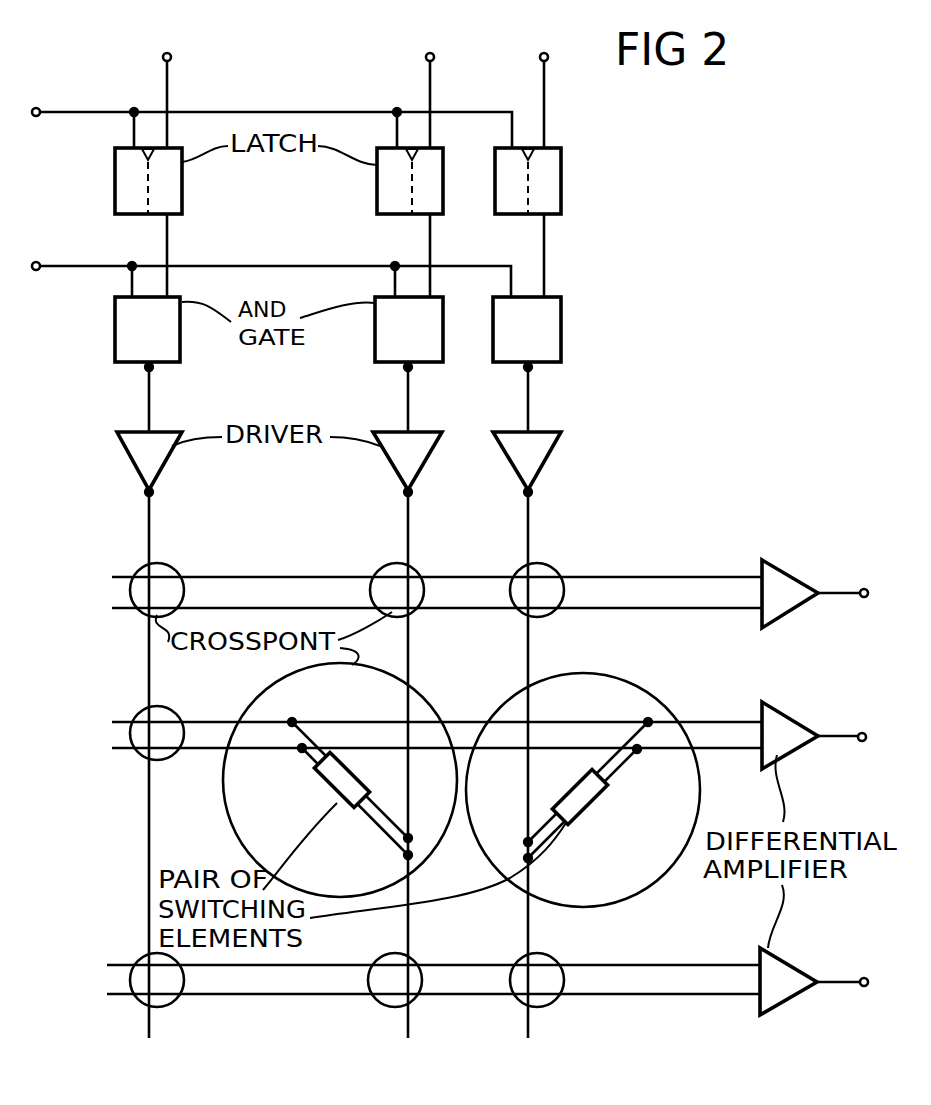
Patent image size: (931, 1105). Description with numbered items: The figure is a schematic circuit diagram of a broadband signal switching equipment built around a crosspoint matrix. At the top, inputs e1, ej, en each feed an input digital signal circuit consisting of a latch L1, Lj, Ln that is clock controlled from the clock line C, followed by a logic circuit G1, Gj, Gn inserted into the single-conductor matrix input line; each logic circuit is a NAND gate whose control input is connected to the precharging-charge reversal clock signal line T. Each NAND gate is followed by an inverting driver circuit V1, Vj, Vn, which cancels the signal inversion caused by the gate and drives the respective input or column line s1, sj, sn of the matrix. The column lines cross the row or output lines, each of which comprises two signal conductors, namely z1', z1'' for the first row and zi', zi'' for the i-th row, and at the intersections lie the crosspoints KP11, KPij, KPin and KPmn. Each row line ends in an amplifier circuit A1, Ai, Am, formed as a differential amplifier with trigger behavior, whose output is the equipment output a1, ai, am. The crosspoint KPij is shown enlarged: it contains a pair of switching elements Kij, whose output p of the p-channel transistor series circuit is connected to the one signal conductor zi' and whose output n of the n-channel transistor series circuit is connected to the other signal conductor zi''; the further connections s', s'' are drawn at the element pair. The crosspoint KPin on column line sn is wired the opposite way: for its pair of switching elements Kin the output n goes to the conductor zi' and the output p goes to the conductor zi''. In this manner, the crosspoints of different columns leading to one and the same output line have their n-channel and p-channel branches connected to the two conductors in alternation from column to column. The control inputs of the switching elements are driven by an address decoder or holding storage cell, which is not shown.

The clock line C is at (268, 115).
The precharging-charge reversal clock signal line T is at (268, 265).
The input e1 is at (167, 86).
The input ej is at (427, 86).
The input en is at (543, 86).
The latch L1 is at (168, 222).
The latch Lj is at (385, 222).
The latch Ln is at (549, 222).
The logic circuit G1 is at (173, 364).
The logic circuit Gj is at (386, 364).
The logic circuit Gn is at (551, 364).
The driver circuit V1 is at (164, 461).
The driver circuit Vj is at (396, 461).
The driver circuit Vn is at (541, 461).
The column line s1 is at (165, 761).
The column line sj is at (421, 761).
The column line sn is at (531, 761).
The signal conductor z1' is at (437, 557).
The signal conductor z1'' is at (437, 627).
The signal conductor zi' is at (437, 702).
The signal conductor zi'' is at (437, 765).
The crosspoint KP11 is at (184, 576).
The crosspoint KPij is at (350, 876).
The crosspoint KPin is at (628, 893).
The crosspoint KPmn is at (566, 999).
The pair of switching elements Kij is at (352, 774).
The pair of switching elements Kin is at (578, 815).
The output of the n-channel transistor series circuit n is at (322, 770).
The output of the p-channel transistor series circuit p is at (336, 758).
The first switching element connection s' is at (421, 801).
The second switching element connection s'' is at (424, 780).
The amplifier circuit A1 is at (792, 585).
The amplifier circuit Ai is at (791, 728).
The amplifier circuit Am is at (798, 977).
The output a1 is at (847, 574).
The output ai is at (843, 720).
The output am is at (850, 967).